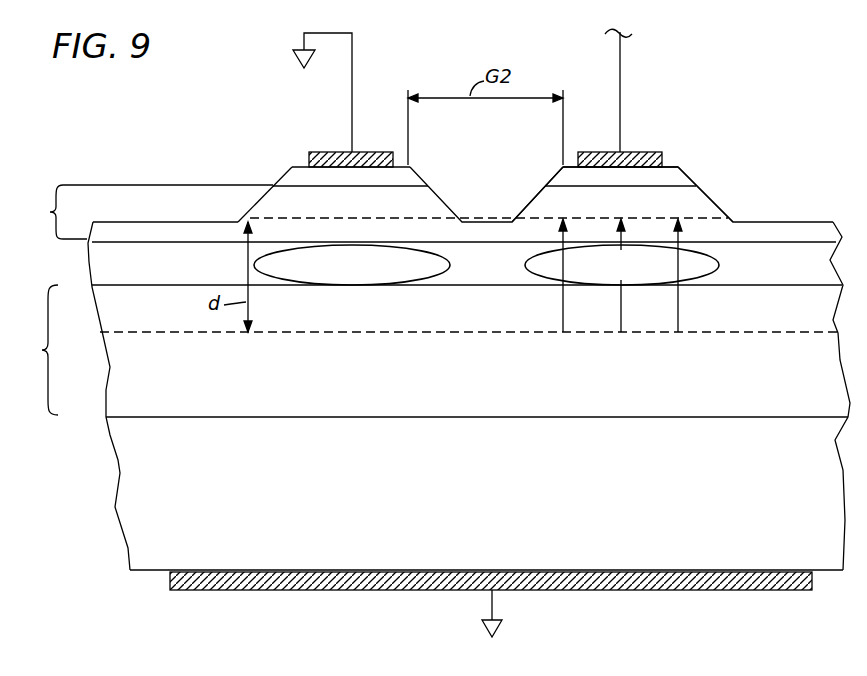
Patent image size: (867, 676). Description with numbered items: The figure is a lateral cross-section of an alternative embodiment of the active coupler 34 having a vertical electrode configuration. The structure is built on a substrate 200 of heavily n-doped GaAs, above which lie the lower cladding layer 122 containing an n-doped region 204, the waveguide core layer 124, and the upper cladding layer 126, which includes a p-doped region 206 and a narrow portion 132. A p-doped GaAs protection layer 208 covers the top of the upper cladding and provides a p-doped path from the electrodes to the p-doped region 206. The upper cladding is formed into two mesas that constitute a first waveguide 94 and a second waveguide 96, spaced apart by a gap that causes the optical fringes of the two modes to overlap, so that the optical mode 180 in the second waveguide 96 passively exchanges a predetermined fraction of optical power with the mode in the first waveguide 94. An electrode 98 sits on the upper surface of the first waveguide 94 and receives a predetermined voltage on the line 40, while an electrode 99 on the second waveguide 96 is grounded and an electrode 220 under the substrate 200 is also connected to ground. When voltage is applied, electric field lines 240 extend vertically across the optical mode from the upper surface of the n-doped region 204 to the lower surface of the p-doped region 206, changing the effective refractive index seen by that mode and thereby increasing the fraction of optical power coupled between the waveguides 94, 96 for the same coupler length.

The active coupler 34 is at (116, 154).
The line 40 is at (622, 64).
The first waveguide 94 is at (693, 157).
The second waveguide 96 is at (439, 190).
The electrode 98 is at (641, 152).
The electrode 99 is at (309, 151).
The lower cladding layer 122 is at (422, 350).
The waveguide core layer 124 is at (90, 253).
The upper cladding layer 126 is at (287, 216).
The narrow portion 132 is at (94, 232).
The optical mode 180 is at (272, 279).
The substrate 200 is at (138, 496).
The doped region 204 is at (120, 392).
The p-doped region 206 is at (252, 208).
The p-GaAs protection layer 208 is at (292, 171).
The electrode 220 is at (236, 593).
The electric field lines 240 is at (680, 308).